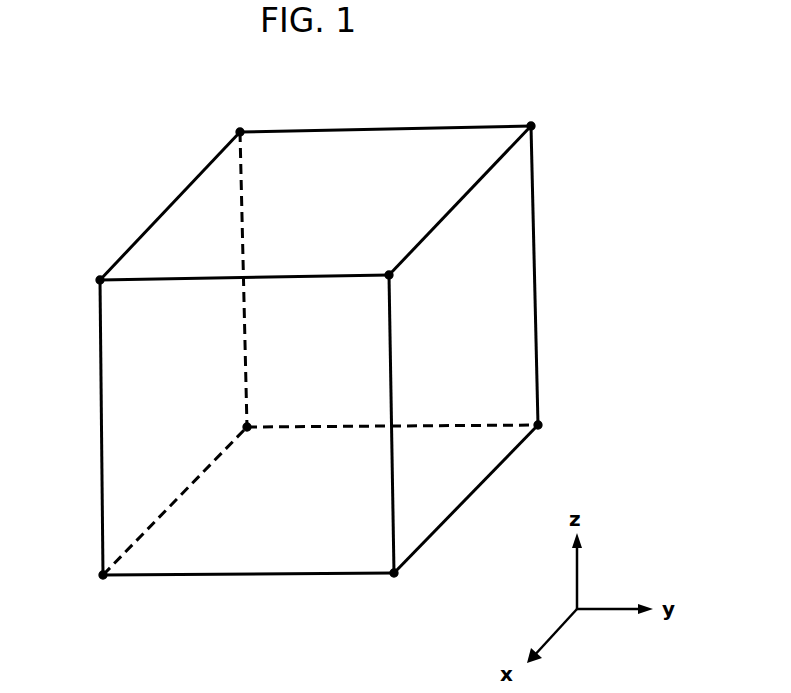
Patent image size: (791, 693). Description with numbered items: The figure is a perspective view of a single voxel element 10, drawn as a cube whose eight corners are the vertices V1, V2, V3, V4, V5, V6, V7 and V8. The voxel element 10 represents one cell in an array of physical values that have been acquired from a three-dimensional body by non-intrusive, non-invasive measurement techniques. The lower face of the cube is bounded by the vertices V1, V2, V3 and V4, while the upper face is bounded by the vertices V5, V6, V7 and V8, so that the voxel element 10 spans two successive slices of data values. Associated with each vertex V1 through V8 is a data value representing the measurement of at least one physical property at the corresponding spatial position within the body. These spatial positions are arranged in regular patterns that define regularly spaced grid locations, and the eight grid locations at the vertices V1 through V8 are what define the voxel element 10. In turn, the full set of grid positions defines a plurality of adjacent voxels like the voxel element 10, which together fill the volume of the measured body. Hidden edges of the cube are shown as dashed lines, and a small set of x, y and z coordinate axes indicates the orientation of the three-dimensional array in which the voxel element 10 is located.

The voxel element 10 is at (332, 327).
The vertex V1 is at (103, 575).
The vertex V2 is at (394, 573).
The vertex V3 is at (538, 425).
The vertex V4 is at (247, 427).
The vertex V5 is at (100, 280).
The vertex V6 is at (389, 275).
The vertex V7 is at (531, 126).
The vertex V8 is at (240, 132).